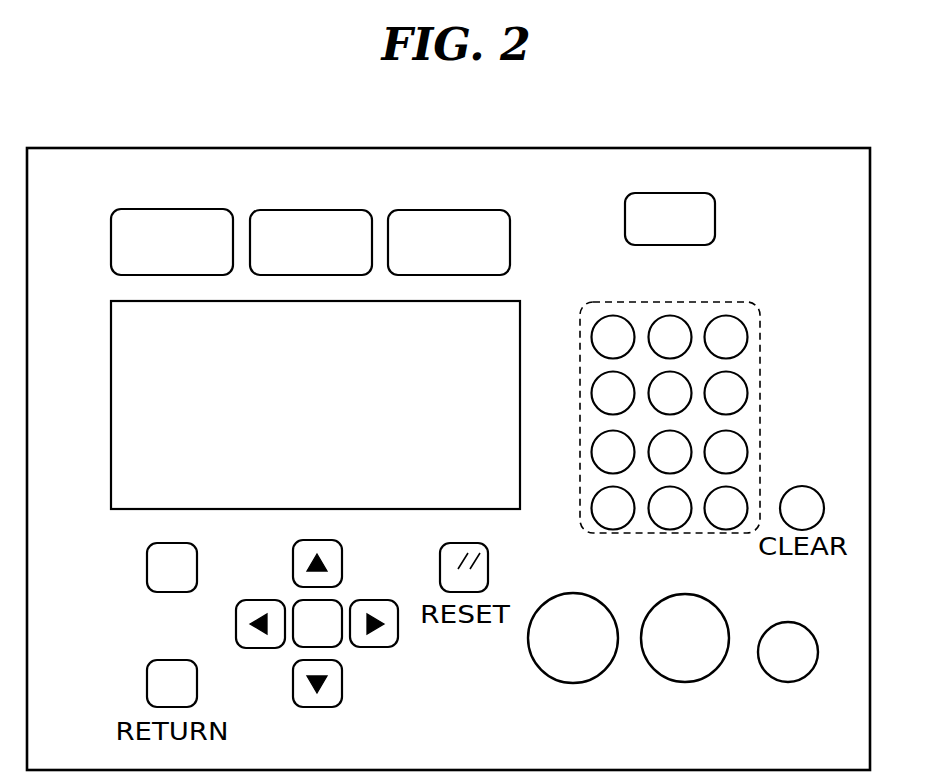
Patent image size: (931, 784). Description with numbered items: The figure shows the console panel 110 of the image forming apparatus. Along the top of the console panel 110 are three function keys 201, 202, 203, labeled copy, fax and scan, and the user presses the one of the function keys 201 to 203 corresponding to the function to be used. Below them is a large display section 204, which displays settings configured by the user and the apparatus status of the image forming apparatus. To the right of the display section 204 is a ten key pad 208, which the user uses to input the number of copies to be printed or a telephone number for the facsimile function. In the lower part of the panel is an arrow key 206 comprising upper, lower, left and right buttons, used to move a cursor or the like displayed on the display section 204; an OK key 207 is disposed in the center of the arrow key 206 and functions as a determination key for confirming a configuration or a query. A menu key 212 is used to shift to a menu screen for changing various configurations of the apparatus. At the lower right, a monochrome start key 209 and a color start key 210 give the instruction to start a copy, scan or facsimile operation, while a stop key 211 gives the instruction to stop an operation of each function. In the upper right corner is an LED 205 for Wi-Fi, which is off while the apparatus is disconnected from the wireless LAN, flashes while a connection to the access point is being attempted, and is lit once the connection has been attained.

The console panel 110 is at (787, 148).
The function key 201 is at (172, 209).
The function key 202 is at (312, 210).
The function key 203 is at (450, 210).
The display section 204 is at (111, 342).
The LED 205 is at (715, 218).
The arrow key 206 is at (322, 708).
The OK key 207 is at (340, 603).
The ten key pad 208 is at (712, 302).
The monochrome start key 209 is at (573, 593).
The color start key 210 is at (688, 594).
The stop key 211 is at (790, 623).
The menu key 212 is at (198, 562).